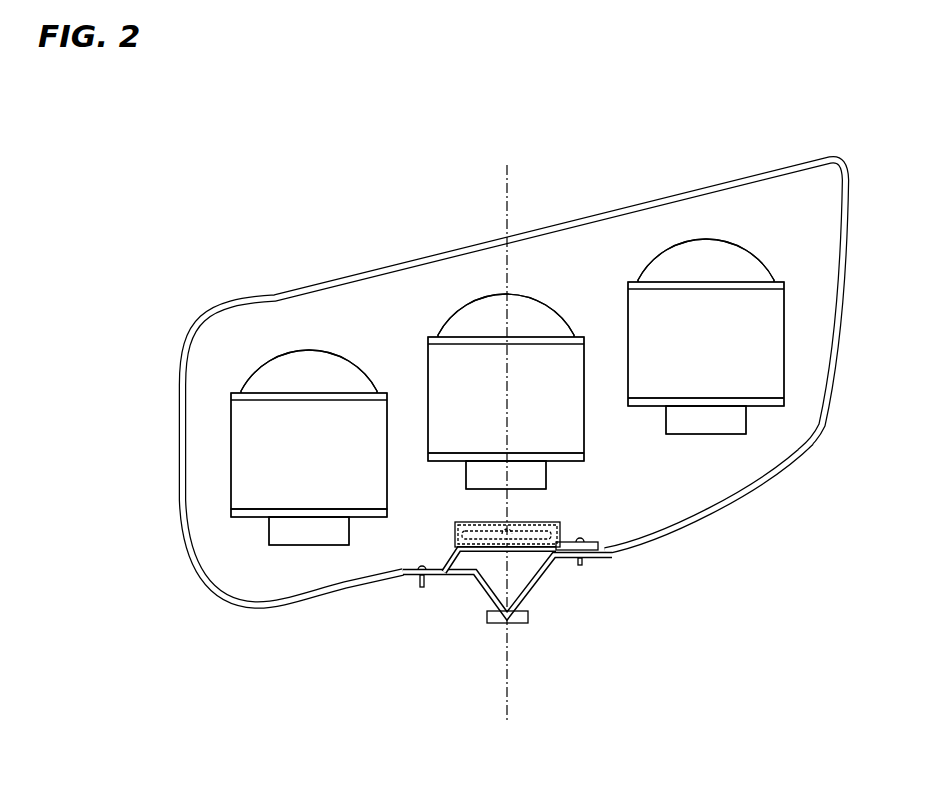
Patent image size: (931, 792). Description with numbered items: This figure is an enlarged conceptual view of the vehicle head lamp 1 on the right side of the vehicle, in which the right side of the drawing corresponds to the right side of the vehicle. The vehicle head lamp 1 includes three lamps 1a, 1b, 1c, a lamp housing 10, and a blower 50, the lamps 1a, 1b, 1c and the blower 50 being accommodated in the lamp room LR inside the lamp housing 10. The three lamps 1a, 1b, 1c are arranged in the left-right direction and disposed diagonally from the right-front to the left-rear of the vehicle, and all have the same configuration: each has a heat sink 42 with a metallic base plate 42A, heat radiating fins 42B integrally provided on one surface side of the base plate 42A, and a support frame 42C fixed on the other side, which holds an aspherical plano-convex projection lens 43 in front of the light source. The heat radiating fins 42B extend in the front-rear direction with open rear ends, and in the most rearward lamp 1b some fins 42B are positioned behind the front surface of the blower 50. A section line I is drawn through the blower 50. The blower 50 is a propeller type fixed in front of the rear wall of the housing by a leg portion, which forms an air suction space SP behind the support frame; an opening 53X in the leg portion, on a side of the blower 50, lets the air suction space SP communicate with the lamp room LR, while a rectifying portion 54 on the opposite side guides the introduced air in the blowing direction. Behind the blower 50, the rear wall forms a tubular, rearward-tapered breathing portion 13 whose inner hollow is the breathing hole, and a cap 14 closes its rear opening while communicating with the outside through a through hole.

The vehicle head lamp 1 is at (232, 137).
The lamp 1a is at (523, 283).
The lamp 1b is at (305, 342).
The lamp 1c is at (724, 225).
The lamp housing 10 is at (177, 451).
The breathing portion 13 is at (482, 593).
The cap 14 is at (521, 620).
The heat sink 42 is at (461, 326).
The base plate 42A is at (250, 514).
The heat radiating fins 42B is at (307, 538).
The support frame 42C is at (247, 493).
The projection lens 43 is at (342, 372).
The blower 50 is at (568, 510).
The opening 53X is at (442, 553).
The rectifying portion 54 is at (585, 548).
The air suction space SP is at (523, 572).
The lamp room LR is at (717, 480).
The section line I is at (506, 446).